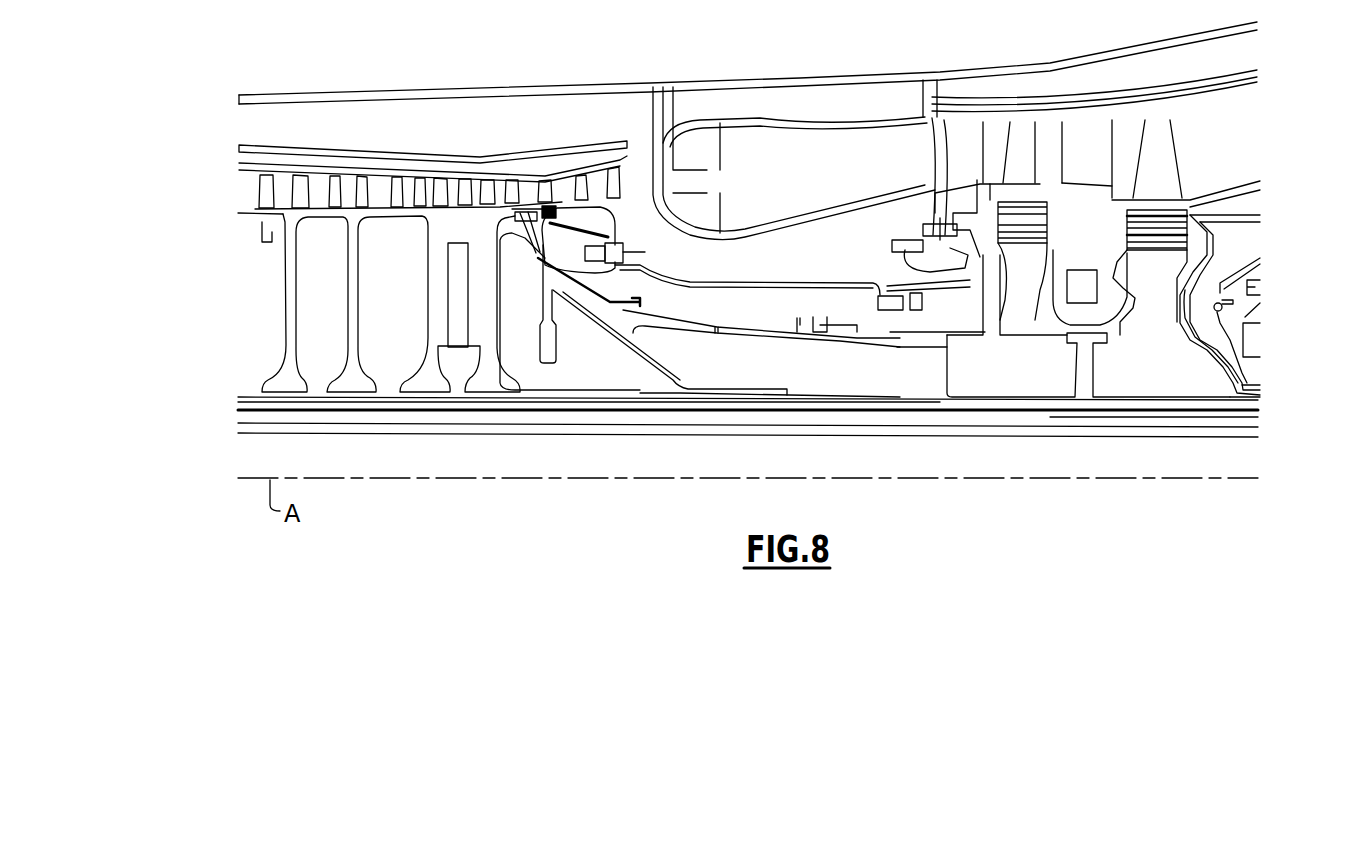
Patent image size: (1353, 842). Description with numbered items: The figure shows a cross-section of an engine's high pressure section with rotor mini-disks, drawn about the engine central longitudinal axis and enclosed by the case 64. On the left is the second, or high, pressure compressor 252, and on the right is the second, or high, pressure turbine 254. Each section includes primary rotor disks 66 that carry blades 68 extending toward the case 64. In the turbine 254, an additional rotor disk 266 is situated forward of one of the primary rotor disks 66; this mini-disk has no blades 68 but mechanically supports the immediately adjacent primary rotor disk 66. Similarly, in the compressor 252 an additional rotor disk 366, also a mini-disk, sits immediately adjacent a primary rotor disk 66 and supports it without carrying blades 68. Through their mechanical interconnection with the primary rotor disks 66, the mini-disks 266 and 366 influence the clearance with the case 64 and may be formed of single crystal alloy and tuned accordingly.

The case 64 is at (1143, 103).
The primary rotor disk 66 is at (494, 372).
The blade 68 is at (488, 197).
The second pressure compressor 252 is at (248, 290).
The second pressure turbine 254 is at (1193, 171).
The additional rotor disk 266 is at (993, 296).
The additional rotor disk 366 is at (560, 352).